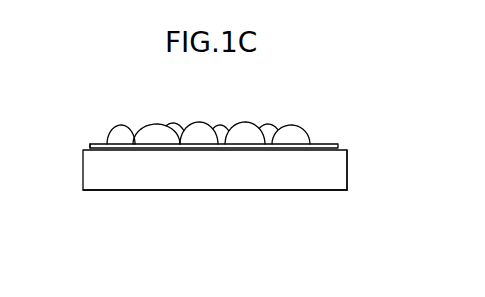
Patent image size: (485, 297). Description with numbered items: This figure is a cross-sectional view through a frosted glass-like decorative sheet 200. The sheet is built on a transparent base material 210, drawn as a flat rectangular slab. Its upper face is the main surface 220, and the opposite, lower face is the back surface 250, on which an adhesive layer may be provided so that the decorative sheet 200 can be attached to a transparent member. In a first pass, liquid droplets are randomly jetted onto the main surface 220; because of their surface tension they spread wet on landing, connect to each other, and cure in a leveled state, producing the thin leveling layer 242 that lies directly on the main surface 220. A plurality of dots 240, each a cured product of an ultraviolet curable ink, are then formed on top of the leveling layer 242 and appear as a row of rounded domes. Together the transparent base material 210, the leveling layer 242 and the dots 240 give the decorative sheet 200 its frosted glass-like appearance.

The decorative sheet 200 is at (388, 205).
The transparent base material 210 is at (333, 165).
The main surface 220 is at (340, 144).
The dots 240 is at (288, 130).
The leveling layer 242 is at (88, 145).
The back surface 250 is at (317, 191).